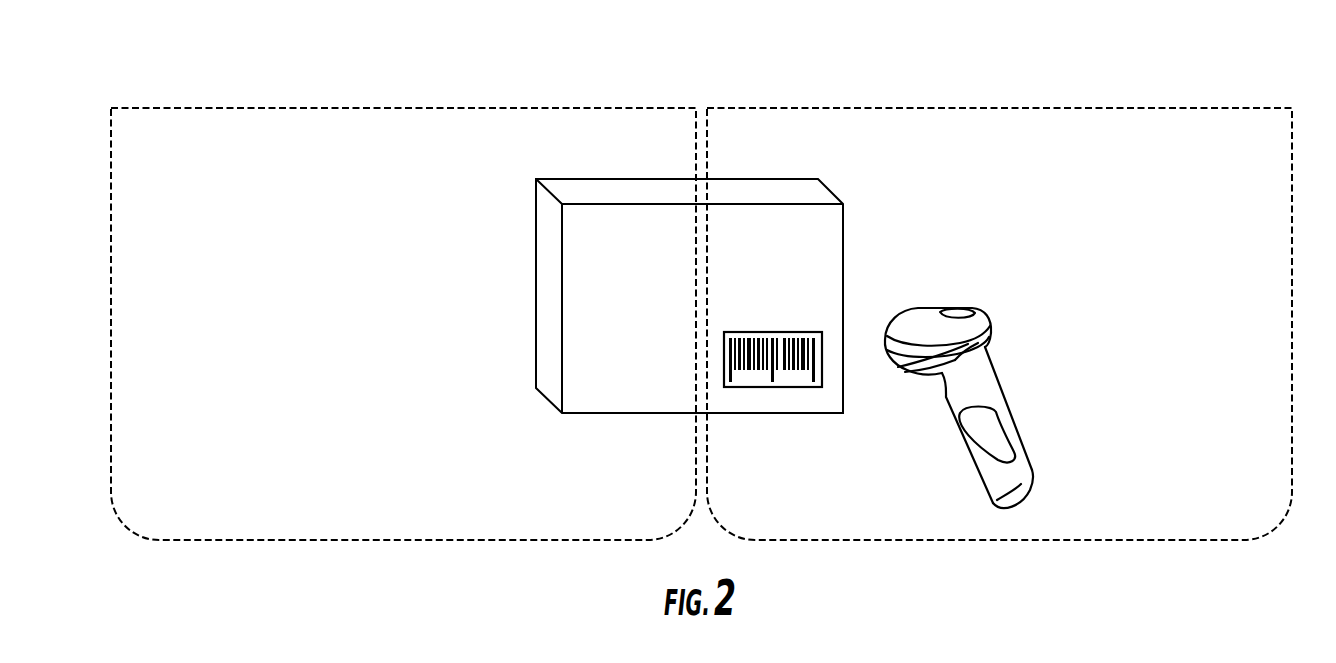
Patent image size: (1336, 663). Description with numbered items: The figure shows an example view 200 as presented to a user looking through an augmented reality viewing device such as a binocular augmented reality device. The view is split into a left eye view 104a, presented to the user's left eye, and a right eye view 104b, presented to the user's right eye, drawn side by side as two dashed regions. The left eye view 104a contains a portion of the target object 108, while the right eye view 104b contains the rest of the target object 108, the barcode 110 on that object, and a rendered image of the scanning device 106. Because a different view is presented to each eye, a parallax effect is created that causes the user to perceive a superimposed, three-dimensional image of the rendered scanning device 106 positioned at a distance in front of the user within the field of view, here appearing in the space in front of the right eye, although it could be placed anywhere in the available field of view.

The example view 200 is at (718, 53).
The left eye view 104a is at (215, 107).
The right eye view 104b is at (1156, 107).
The rendered image of a scanning device 106 is at (933, 303).
The target object 108 is at (536, 178).
The barcode 110 is at (793, 331).